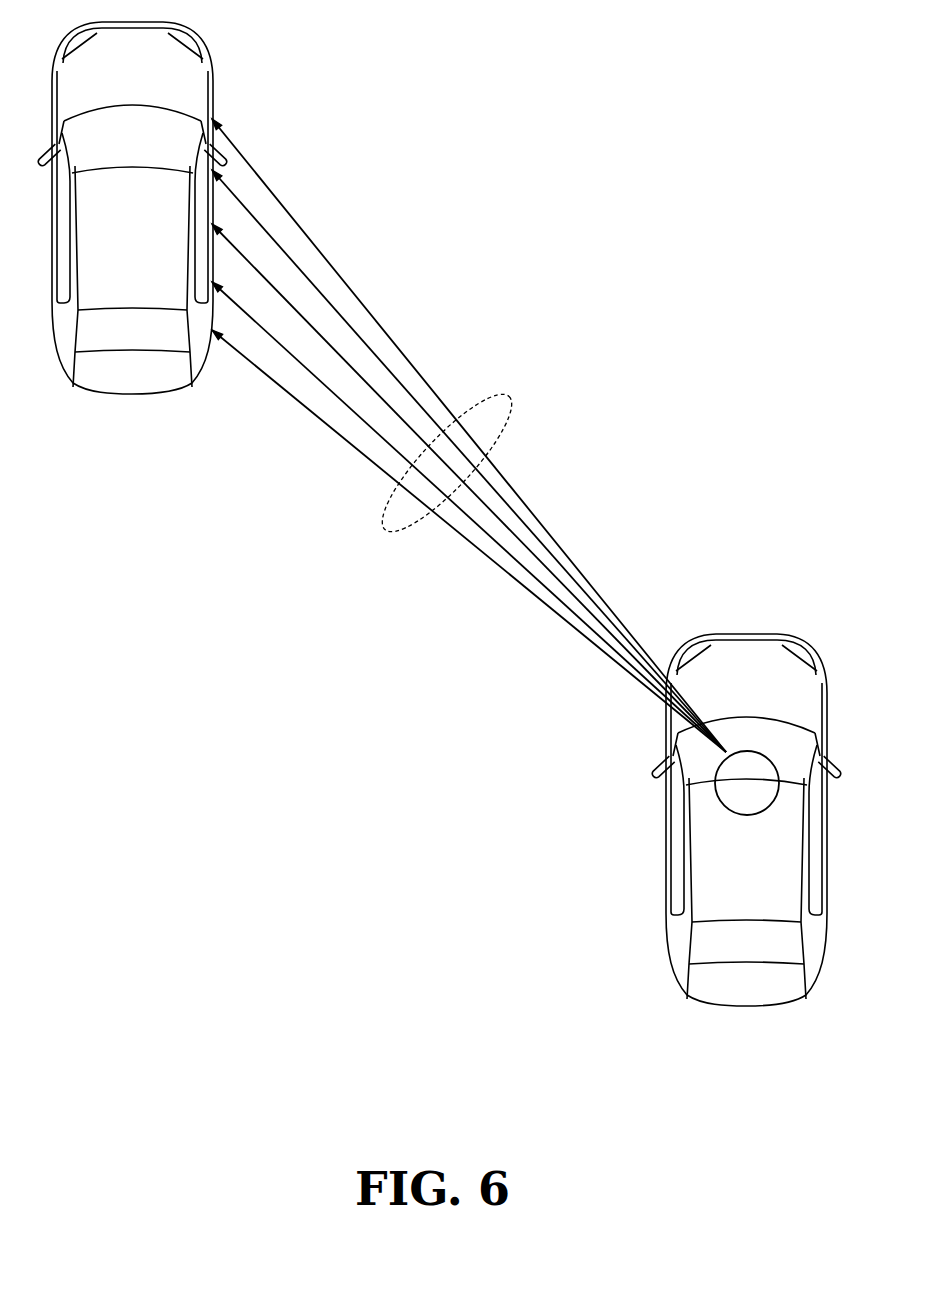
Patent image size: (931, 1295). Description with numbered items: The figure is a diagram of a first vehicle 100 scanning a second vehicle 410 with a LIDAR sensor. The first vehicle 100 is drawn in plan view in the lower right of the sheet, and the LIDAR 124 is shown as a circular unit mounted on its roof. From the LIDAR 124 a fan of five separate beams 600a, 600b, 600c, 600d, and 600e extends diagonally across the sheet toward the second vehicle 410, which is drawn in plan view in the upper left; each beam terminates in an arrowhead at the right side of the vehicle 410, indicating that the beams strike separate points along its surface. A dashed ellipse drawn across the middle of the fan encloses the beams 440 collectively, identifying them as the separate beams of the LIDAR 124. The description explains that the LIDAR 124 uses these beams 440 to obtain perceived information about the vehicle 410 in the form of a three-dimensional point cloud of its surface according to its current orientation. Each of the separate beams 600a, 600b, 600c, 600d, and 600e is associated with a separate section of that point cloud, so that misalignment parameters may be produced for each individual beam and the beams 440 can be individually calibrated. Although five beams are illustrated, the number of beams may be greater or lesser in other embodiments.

The vehicle 410 is at (132, 208).
The vehicle 100 is at (746, 820).
The LIDAR 124 is at (732, 817).
The beams 440 is at (390, 530).
The beam 600a is at (214, 119).
The beam 600b is at (214, 170).
The beam 600c is at (214, 224).
The beam 600d is at (214, 282).
The beam 600e is at (214, 330).